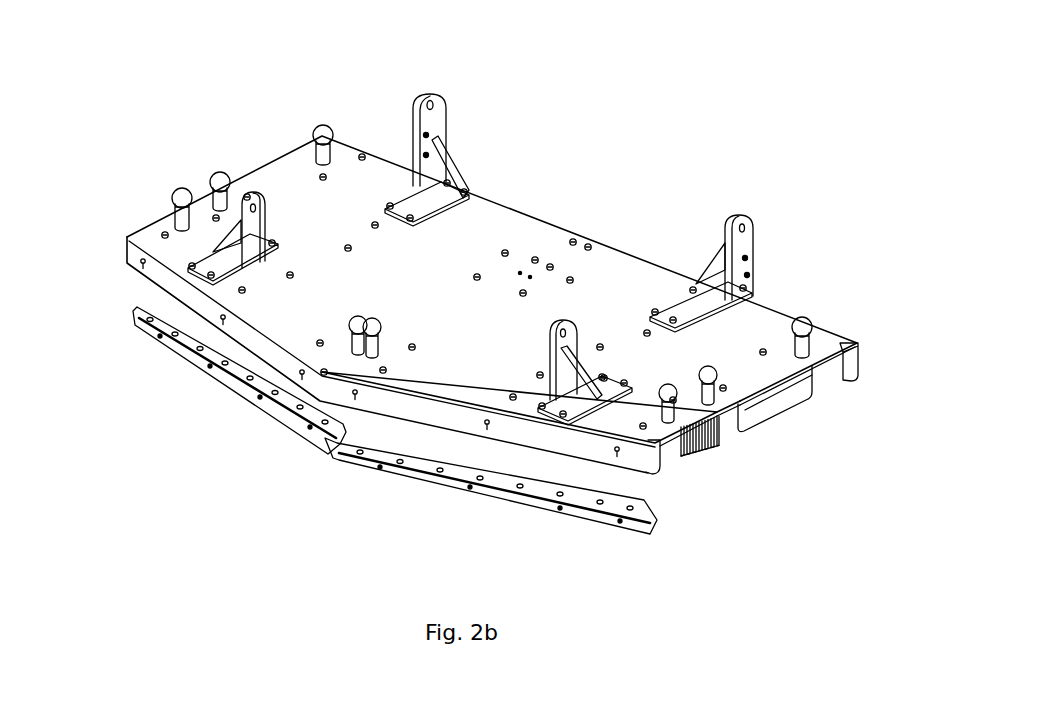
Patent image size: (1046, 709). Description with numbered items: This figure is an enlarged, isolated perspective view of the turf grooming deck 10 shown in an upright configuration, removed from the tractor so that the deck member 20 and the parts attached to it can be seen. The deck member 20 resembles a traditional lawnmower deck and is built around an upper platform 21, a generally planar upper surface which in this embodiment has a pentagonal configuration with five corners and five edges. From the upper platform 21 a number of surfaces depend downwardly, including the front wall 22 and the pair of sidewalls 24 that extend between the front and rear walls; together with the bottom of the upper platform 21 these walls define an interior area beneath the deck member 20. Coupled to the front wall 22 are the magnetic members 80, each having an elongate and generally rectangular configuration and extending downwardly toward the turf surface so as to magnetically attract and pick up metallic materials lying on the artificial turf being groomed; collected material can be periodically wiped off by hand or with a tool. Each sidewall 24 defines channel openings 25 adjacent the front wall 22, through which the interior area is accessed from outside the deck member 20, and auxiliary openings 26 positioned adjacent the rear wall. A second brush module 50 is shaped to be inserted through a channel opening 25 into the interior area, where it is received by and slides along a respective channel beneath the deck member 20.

The turf grooming deck 10 is at (630, 82).
The deck member 20 is at (651, 211).
The upper platform 21 is at (430, 290).
The front wall 22 is at (175, 285).
The sidewalls 24 is at (781, 400).
The channel openings 25 is at (727, 441).
The auxiliary openings 26 is at (829, 390).
The second brush module 50 is at (698, 481).
The magnetic member 80 is at (245, 393).